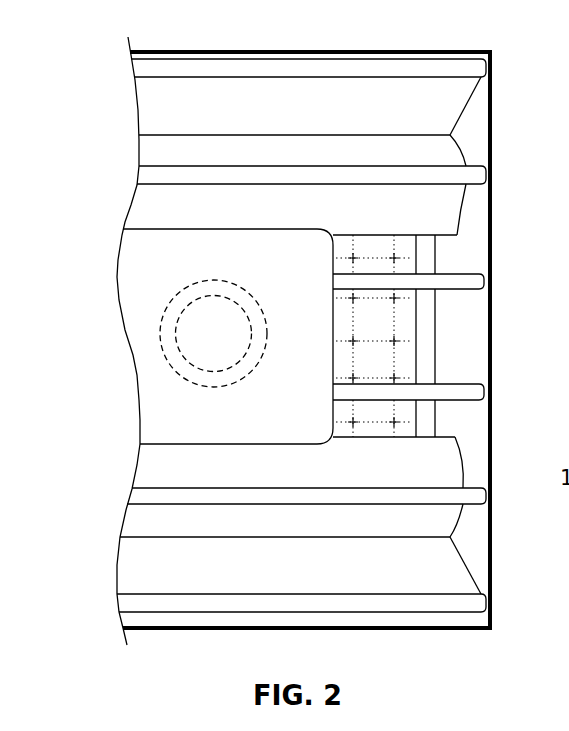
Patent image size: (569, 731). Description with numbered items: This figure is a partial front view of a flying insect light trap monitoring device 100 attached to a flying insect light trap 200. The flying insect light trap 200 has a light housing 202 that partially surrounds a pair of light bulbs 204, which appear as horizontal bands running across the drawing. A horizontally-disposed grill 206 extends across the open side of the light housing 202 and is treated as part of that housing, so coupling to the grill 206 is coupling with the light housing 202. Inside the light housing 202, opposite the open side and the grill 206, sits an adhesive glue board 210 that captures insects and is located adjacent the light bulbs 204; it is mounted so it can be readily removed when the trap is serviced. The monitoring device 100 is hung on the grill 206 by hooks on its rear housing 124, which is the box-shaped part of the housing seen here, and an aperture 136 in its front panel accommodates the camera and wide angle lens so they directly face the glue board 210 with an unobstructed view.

The flying insect light trap monitoring device 100 is at (190, 336).
The rear housing 124 is at (281, 231).
The aperture 136 is at (234, 386).
The flying insect light trap 200 is at (128, 136).
The light housing 202 is at (370, 50).
The light bulbs 204 is at (299, 541).
The grill 206 is at (472, 164).
The adhesive glue board 210 is at (418, 332).